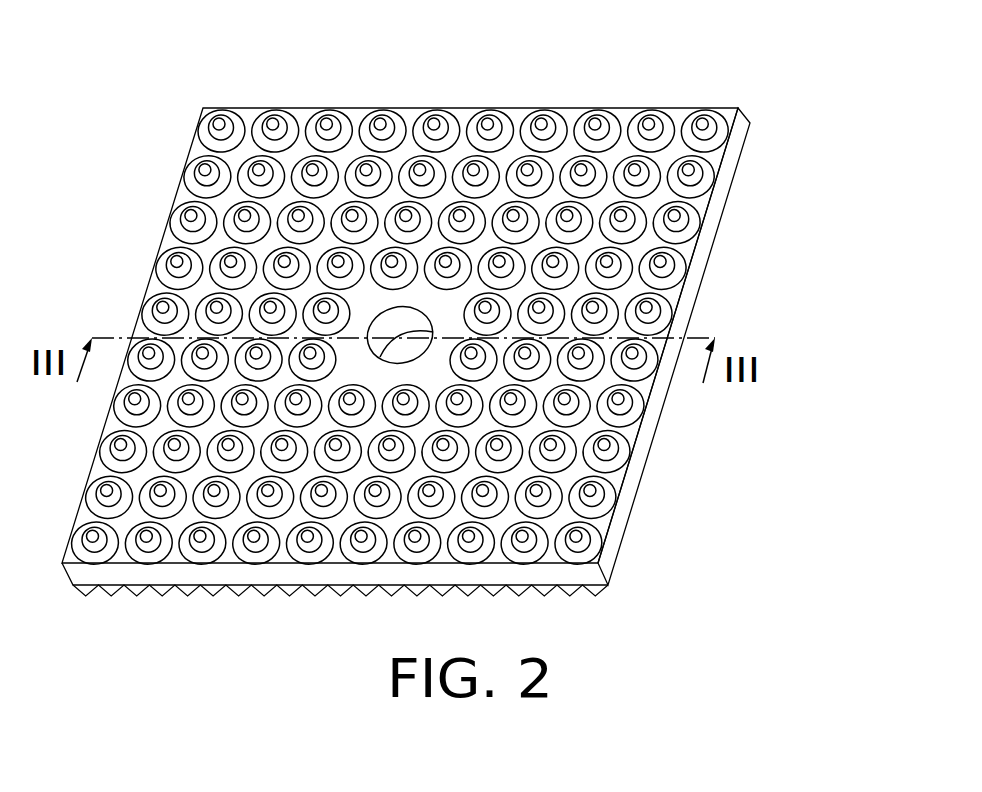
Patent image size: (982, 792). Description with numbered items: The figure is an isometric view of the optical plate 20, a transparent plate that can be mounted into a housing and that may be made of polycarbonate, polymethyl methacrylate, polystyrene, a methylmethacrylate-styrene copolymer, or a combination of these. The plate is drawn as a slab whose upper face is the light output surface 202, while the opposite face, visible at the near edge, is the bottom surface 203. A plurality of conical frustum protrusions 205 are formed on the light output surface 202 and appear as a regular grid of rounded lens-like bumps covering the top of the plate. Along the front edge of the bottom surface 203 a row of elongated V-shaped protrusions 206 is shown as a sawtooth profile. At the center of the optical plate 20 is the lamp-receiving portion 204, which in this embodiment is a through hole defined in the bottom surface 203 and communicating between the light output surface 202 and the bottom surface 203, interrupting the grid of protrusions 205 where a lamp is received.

The optical plate 20 is at (450, 342).
The light output surface 202 is at (685, 247).
The bottom surface 203 is at (712, 255).
The lamp-receiving portion 204 is at (405, 345).
The conical frustum protrusions 205 is at (702, 182).
The elongated V-shaped protrusions 206 is at (592, 588).